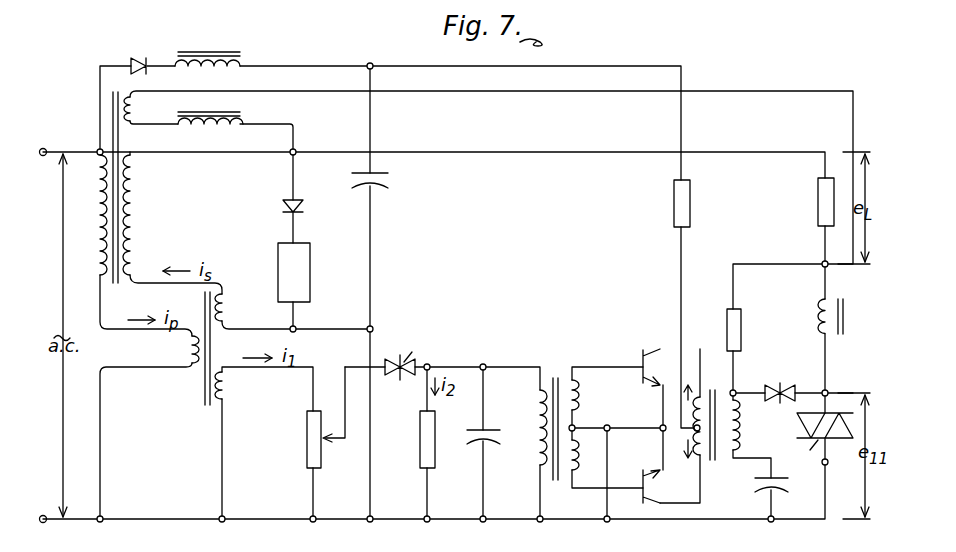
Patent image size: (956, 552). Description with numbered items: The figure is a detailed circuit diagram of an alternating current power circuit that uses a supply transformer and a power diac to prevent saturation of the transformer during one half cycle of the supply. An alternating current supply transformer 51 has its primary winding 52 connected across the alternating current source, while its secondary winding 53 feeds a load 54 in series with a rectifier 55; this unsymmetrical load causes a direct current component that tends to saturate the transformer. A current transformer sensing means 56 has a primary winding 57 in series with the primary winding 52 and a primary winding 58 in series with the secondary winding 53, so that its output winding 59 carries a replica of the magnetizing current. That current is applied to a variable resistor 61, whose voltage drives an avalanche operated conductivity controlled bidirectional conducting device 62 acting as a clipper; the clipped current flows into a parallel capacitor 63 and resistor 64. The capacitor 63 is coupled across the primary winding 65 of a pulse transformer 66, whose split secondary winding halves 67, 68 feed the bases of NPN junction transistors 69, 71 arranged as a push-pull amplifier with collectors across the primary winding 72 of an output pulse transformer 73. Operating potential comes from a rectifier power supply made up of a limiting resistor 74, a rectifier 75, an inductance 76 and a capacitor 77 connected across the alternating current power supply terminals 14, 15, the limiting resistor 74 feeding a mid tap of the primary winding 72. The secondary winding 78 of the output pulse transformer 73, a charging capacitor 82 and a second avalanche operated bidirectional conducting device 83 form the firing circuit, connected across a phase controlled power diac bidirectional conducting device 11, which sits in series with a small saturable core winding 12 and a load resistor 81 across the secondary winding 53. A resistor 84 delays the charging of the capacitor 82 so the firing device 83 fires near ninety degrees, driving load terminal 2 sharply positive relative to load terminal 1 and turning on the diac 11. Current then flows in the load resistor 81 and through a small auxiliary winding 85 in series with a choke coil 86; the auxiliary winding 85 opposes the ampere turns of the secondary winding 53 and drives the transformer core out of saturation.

The alternating current power supply terminal 14 is at (52, 150).
The alternating current power supply terminal 15 is at (152, 520).
The rectifier 75 is at (137, 58).
The inductance 76 is at (238, 62).
The small auxiliary winding 85 is at (134, 109).
The choke coil 86 is at (243, 121).
The alternating current supply transformer 51 is at (115, 199).
The primary winding 52 is at (94, 208).
The secondary winding 53 is at (137, 216).
The current transformer sensing means 56 is at (188, 348).
The primary winding 57 is at (186, 351).
The primary winding 58 is at (229, 315).
The output winding 59 is at (229, 386).
The rectifier 55 is at (304, 212).
The load 54 is at (312, 269).
The capacitor 77 is at (384, 179).
The variable resistor 61 is at (307, 453).
The avalanche operated conductivity controlled bidirectional conducting device 62 is at (398, 340).
The capacitor 63 is at (494, 432).
The resistor 64 is at (420, 429).
The primary winding 65 is at (536, 452).
The pulse transformer 66 is at (555, 410).
The secondary winding half 67 is at (580, 407).
The secondary winding half 68 is at (578, 461).
The NPN junction transistor 69 is at (641, 359).
The NPN junction transistor 71 is at (641, 476).
The primary winding 72 is at (703, 394).
The output pulse transformer 73 is at (720, 435).
The secondary winding 78 is at (741, 432).
The limiting resistor 74 is at (690, 206).
The load resistor 81 is at (818, 196).
The resistor 84 is at (742, 330).
The small saturable core winding 12 is at (821, 305).
The second avalanche operated bidirectional conducting device 83 is at (784, 385).
The charging capacitor 82 is at (775, 491).
The load terminal 2 is at (828, 392).
The phase controlled power diac bidirectional conducting device 11 is at (805, 455).
The load terminal 1 is at (829, 465).